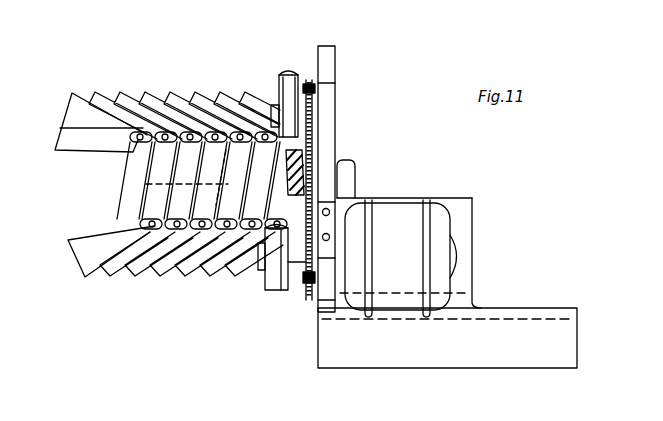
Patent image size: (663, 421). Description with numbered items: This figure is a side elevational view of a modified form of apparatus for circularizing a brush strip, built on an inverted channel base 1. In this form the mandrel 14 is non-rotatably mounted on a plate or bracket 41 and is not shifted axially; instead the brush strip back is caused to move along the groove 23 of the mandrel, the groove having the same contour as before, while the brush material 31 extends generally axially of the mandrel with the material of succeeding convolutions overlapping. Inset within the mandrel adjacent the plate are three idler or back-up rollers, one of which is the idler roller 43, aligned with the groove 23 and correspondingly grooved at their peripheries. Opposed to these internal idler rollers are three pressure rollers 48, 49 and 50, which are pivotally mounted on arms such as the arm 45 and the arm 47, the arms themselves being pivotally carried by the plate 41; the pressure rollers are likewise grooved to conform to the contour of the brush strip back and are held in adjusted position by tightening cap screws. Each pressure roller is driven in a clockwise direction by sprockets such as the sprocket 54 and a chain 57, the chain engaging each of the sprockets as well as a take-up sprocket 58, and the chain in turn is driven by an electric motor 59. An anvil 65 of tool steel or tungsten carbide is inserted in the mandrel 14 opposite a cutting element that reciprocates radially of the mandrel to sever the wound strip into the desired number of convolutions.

The inverted channel base 1 is at (428, 355).
The mandrel 14 is at (173, 206).
The groove 23 is at (190, 148).
The brush material 31 is at (176, 90).
The plate or bracket 41 is at (323, 53).
The idler roller 43 is at (300, 160).
The arm 45 is at (277, 93).
The arm 47 is at (258, 273).
The pressure roller 48 is at (283, 74).
The pressure roller 49 is at (314, 180).
The pressure roller 50 is at (277, 282).
The sprocket 54 is at (313, 108).
The chain 57 is at (309, 84).
The take-up sprocket 58 is at (310, 284).
The electric motor 59 is at (397, 221).
The anvil 65 is at (174, 177).